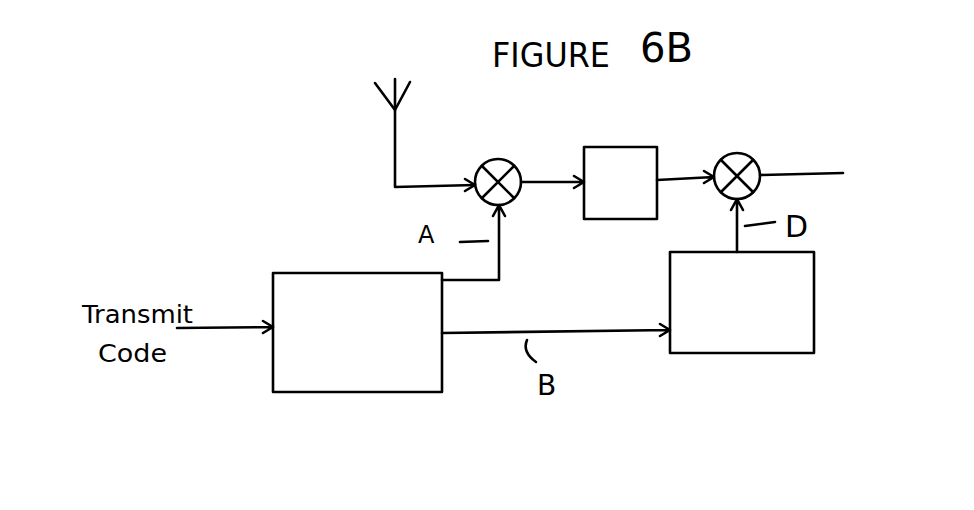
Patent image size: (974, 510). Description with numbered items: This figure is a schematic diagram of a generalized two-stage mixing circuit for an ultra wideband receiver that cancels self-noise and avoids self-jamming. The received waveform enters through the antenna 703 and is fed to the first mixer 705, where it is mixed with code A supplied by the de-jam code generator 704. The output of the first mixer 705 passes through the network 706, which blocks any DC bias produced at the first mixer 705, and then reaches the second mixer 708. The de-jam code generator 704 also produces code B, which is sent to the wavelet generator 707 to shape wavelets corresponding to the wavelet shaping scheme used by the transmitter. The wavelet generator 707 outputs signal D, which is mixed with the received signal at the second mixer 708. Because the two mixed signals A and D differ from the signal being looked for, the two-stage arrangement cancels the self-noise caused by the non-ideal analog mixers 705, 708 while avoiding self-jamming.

The antenna 703 is at (403, 125).
The de-jam code generator 704 is at (352, 408).
The first mixer 705 is at (510, 150).
The network 706 is at (624, 225).
The wavelet generator 707 is at (820, 302).
The second mixer 708 is at (757, 148).